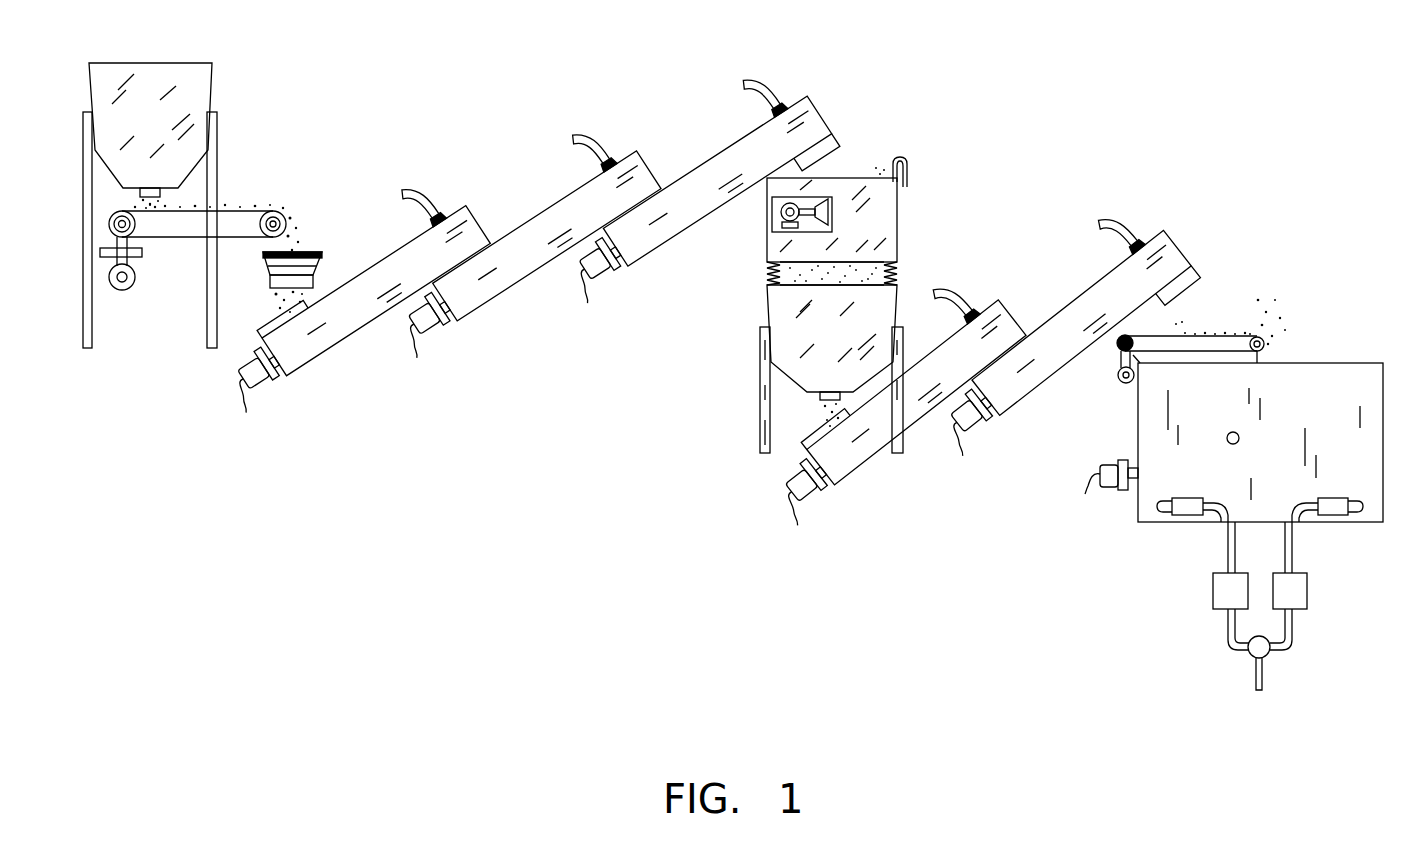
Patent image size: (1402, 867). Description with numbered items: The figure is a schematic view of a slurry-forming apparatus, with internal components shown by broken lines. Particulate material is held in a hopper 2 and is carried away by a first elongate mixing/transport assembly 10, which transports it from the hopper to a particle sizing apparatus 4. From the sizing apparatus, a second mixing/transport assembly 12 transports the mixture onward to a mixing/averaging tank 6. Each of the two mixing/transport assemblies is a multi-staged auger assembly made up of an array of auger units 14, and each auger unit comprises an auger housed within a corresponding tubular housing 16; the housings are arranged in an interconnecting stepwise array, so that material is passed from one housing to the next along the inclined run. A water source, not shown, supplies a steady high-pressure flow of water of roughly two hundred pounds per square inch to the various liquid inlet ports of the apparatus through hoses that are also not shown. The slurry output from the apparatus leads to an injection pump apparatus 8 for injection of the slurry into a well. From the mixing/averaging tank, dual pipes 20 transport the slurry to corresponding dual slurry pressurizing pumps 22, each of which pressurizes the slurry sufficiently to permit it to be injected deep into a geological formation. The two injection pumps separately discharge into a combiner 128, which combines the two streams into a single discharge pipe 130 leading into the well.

The hopper 2 is at (212, 82).
The first elongate mixing/transport assembly 10 is at (553, 178).
The auger unit 14 is at (352, 323).
The tubular housing 16 is at (312, 364).
The particle sizing apparatus 4 is at (900, 304).
The second mixing/transport assembly 12 is at (986, 452).
The mixing/averaging tank 6 is at (1323, 367).
The injection pump apparatus 8 is at (1256, 622).
The dual pipes 20 is at (1230, 538).
The slurry pressurizing pumps 22 is at (1223, 587).
The combiner 128 is at (1252, 655).
The discharge pipe 130 is at (1264, 673).